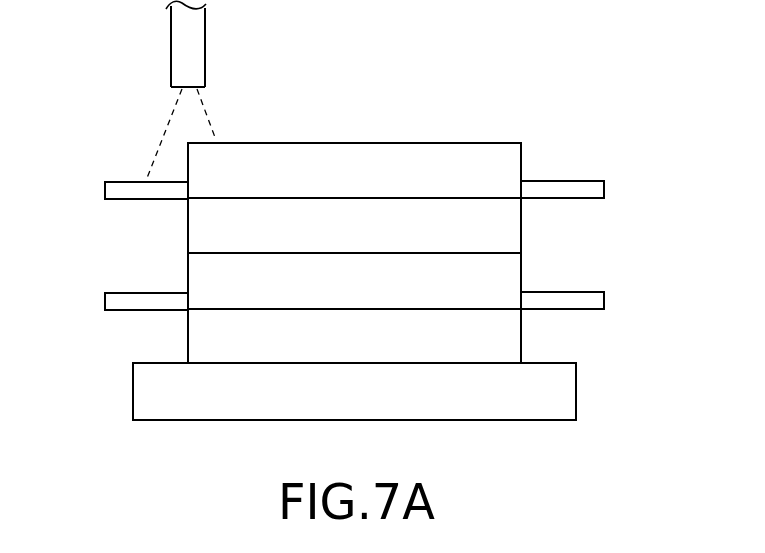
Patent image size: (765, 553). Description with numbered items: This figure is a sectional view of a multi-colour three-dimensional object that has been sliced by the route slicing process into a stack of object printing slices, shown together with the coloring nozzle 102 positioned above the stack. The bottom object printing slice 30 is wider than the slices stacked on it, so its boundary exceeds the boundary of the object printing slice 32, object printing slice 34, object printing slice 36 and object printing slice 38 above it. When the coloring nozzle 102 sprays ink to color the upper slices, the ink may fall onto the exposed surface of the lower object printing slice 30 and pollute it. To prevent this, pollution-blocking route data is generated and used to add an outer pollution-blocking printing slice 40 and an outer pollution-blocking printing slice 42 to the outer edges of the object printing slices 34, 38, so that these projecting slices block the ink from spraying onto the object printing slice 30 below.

The coloring nozzle 102 is at (193, 44).
The object printing slice 38 is at (512, 162).
The object printing slice 36 is at (513, 227).
The object printing slice 34 is at (513, 273).
The object printing slice 32 is at (513, 338).
The object printing slice 30 is at (566, 396).
The outer pollution-blocking printing slice 42 is at (138, 185).
The outer pollution-blocking printing slice 40 is at (113, 302).